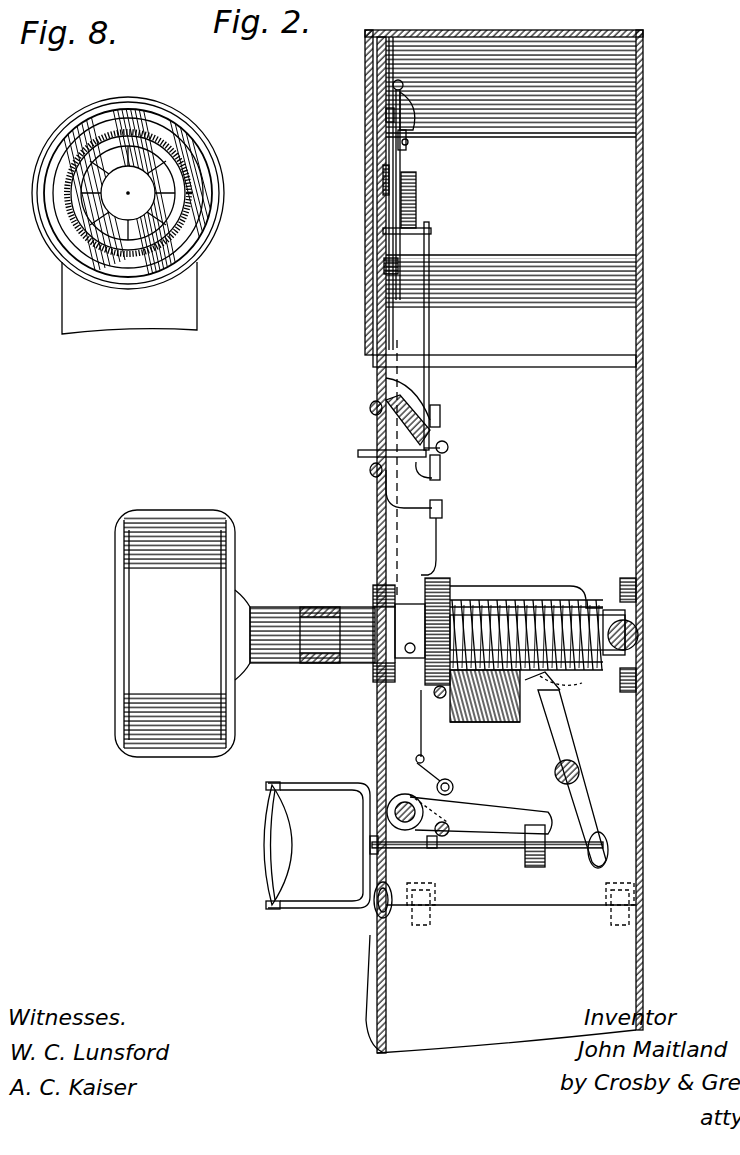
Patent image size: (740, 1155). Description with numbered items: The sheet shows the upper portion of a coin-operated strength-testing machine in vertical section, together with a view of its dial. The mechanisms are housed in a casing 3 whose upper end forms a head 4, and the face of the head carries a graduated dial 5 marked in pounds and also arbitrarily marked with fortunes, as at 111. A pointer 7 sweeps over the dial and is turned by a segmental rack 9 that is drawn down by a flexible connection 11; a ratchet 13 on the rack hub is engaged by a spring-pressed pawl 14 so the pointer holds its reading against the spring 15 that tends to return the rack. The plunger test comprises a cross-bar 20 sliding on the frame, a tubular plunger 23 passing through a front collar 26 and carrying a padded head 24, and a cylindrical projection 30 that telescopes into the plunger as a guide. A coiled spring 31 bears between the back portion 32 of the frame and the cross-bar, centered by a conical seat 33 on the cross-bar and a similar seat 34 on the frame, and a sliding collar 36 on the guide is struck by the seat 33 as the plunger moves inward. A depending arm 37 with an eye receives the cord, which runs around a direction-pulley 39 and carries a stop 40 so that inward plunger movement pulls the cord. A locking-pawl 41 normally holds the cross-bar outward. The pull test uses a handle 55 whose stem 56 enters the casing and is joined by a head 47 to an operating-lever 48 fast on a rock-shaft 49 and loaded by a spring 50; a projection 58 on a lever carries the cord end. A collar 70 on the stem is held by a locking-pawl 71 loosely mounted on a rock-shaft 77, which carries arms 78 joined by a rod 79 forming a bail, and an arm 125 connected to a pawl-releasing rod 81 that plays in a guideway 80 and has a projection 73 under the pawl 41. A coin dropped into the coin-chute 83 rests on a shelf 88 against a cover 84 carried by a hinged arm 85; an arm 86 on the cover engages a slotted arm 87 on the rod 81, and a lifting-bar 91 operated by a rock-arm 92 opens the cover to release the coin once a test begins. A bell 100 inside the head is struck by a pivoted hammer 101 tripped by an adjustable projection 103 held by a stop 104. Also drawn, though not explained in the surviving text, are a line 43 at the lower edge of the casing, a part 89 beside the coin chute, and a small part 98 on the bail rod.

In FIG. 8, the casing 3 is at (118, 322).
In FIG. 2, the casing 3 is at (377, 530).
In FIG. 8, the head 4 is at (214, 140).
In FIG. 2, the head 4 is at (643, 152).
In FIG. 8, the graduated dial 5 is at (190, 208).
In FIG. 2, the graduated dial 5 is at (393, 80).
In FIG. 2, the pointer 7 is at (396, 158).
In FIG. 2, the segmental rack 9 is at (389, 148).
In FIG. 2, the flexible connection 11 is at (442, 508).
In FIG. 2, the ratchet 13 is at (417, 195).
In FIG. 2, the spring-pressed pawl 14 is at (431, 231).
In FIG. 2, the spring 15 is at (385, 178).
In FIG. 2, the cross-bar 20 is at (442, 580).
In FIG. 2, the tubular plunger 23 is at (320, 607).
In FIG. 2, the padded head 24 is at (166, 510).
In FIG. 2, the collar 26 is at (385, 680).
In FIG. 2, the cylindrical projection 30 is at (320, 640).
In FIG. 2, the coiled spring 31 is at (502, 598).
In FIG. 2, the back portion 32 is at (636, 606).
In FIG. 2, the conical seat 33 is at (468, 600).
In FIG. 2, the conical seat 34 is at (636, 690).
In FIG. 2, the sliding collar 36 is at (522, 600).
In FIG. 2, the depending arm 37 is at (420, 716).
In FIG. 2, the direction-pulley 39 is at (385, 664).
In FIG. 2, the button or stop 40 is at (455, 724).
In FIG. 2, the locking-pawl 41 is at (571, 585).
In FIG. 2, the cord 43 is at (366, 1036).
In FIG. 2, the head 47 is at (610, 852).
In FIG. 2, the operating-lever 48 is at (562, 740).
In FIG. 2, the rock-shaft 49 is at (583, 762).
In FIG. 2, the spring 50 is at (492, 722).
In FIG. 2, the handle 55 is at (268, 841).
In FIG. 2, the stem 56 is at (448, 836).
In FIG. 2, the projection 58 is at (560, 683).
In FIG. 2, the collar 70 is at (534, 868).
In FIG. 2, the locking-pawl 71 is at (486, 815).
In FIG. 2, the projection 73 is at (401, 584).
In FIG. 2, the rock-shaft 77 is at (395, 812).
In FIG. 2, the arms 78 is at (388, 915).
In FIG. 2, the rod 79 is at (490, 850).
In FIG. 2, the guideway 80 is at (386, 494).
In FIG. 2, the pawl-releasing rod 81 is at (438, 540).
In FIG. 2, the coin-chute 83 is at (420, 430).
In FIG. 2, the cover 84 is at (448, 447).
In FIG. 2, the arm 85 is at (418, 396).
In FIG. 2, the arm 86 is at (440, 415).
In FIG. 2, the arm 87 is at (442, 465).
In FIG. 2, the shelf or rest 88 is at (435, 479).
In FIG. 2, the bracket 89 is at (362, 450).
In FIG. 2, the lifting-bar 91 is at (429, 345).
In FIG. 2, the rock-arm 92 is at (390, 262).
In FIG. 2, the nut 98 is at (430, 846).
In FIG. 2, the bell 100 is at (413, 116).
In FIG. 2, the pivoted hammer 101 is at (406, 135).
In FIG. 2, the adjustable projection 103 is at (407, 144).
In FIG. 2, the stop 104 is at (388, 114).
In FIG. 8, the fortune markings 111 is at (92, 225).
In FIG. 2, the arm 125 is at (420, 784).